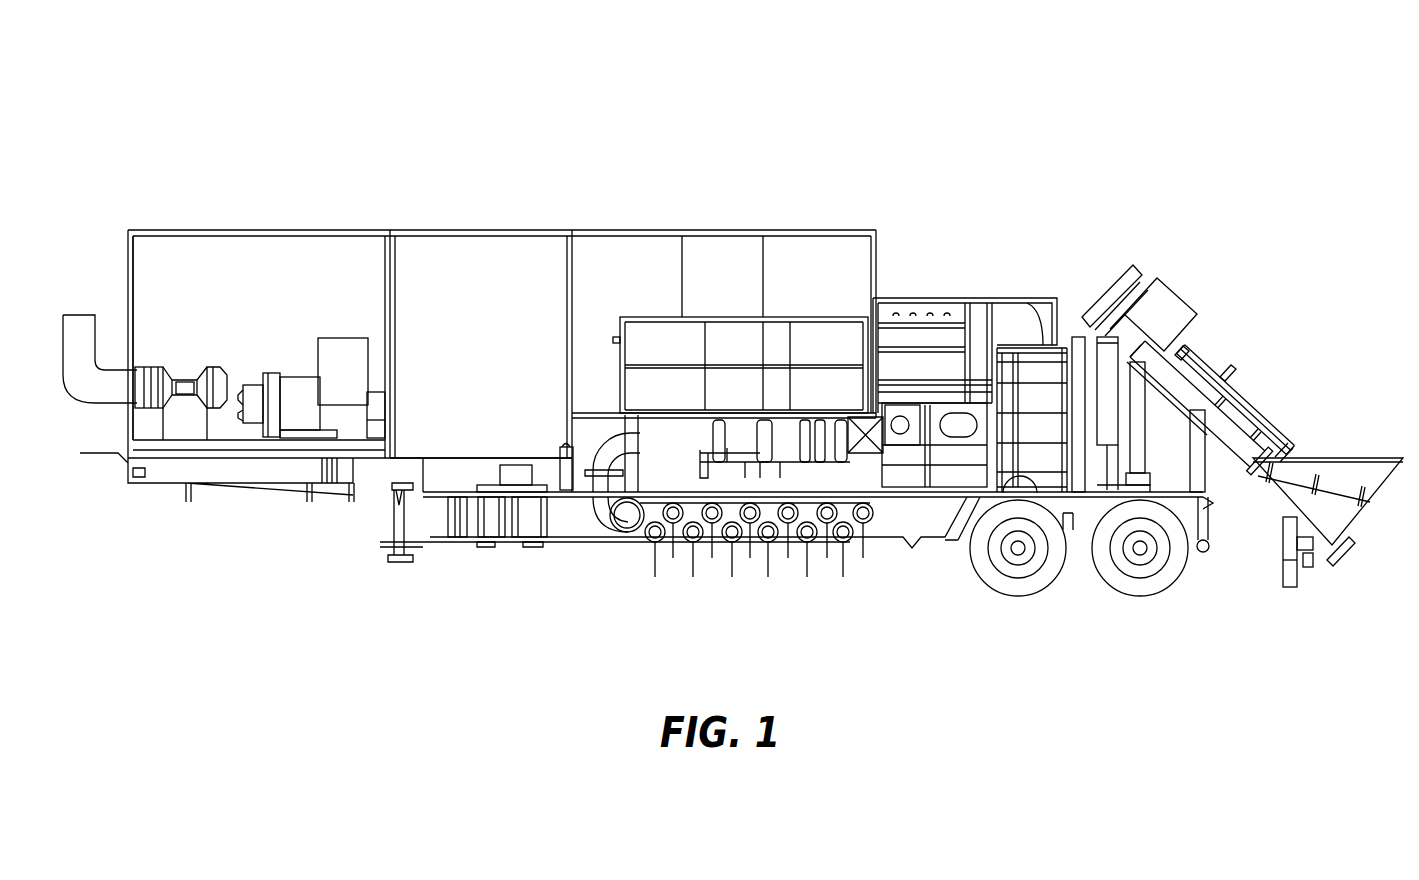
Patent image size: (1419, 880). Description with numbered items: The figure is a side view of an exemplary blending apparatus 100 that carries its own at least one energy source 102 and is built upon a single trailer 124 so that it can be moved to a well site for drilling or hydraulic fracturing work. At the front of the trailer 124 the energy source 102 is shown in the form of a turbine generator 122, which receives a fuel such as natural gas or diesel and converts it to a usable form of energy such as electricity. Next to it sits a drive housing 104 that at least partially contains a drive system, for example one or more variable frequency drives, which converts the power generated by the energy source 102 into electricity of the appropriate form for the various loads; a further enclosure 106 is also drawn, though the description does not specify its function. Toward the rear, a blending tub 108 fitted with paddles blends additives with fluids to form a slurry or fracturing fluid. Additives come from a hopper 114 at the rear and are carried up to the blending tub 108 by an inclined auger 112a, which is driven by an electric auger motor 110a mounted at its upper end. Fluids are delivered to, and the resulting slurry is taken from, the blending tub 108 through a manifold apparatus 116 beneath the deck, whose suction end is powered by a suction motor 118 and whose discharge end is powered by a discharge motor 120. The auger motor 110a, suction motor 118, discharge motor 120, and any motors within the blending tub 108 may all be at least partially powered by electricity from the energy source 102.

The blending apparatus 100 is at (212, 104).
The energy source 102 is at (245, 246).
The drive housing 104 is at (455, 246).
The enclosure 106 is at (832, 246).
The blending tub 108 is at (1043, 340).
The electric auger motor 110a is at (1163, 290).
The auger 112a is at (1222, 392).
The hopper 114 is at (1328, 458).
The manifold apparatus 116 is at (607, 500).
The suction motor 118 is at (510, 487).
The discharge motor 120 is at (690, 465).
The turbine generator 122 is at (273, 377).
The trailer 124 is at (1082, 528).